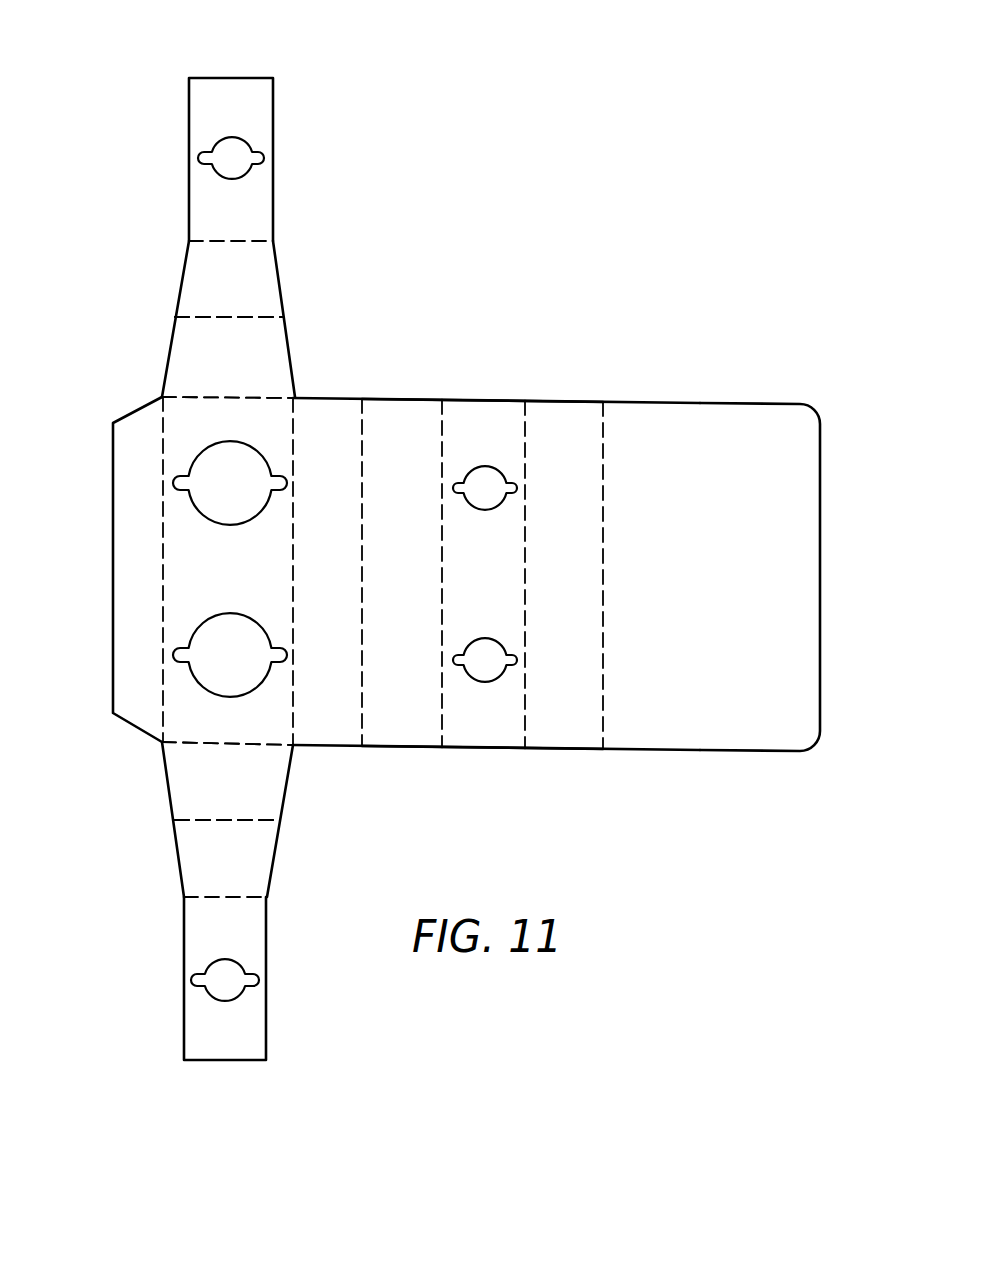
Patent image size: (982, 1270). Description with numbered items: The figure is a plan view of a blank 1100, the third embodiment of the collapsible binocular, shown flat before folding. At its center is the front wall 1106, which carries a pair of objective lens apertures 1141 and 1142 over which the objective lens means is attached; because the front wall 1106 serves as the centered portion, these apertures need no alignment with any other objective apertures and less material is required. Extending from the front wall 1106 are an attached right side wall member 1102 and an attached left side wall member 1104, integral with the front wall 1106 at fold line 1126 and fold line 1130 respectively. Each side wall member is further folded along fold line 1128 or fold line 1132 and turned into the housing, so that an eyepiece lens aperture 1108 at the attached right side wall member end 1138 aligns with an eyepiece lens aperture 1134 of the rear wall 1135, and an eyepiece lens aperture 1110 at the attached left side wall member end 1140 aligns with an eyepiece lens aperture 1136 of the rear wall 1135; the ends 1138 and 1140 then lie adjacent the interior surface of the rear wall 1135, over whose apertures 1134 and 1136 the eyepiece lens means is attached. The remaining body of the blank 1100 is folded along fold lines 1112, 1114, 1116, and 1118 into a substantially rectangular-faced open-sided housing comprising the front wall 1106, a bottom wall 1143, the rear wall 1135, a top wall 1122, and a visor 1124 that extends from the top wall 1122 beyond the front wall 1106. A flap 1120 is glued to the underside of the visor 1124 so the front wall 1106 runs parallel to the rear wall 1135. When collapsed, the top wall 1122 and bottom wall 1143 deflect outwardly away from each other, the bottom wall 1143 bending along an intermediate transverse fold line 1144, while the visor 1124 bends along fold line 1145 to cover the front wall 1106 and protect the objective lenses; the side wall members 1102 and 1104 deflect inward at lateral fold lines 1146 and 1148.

The blank 1100 is at (437, 341).
The attached right side wall member 1102 is at (283, 303).
The attached left side wall member 1104 is at (281, 833).
The front wall 1106 is at (280, 533).
The eyepiece lens aperture 1108 is at (266, 152).
The eyepiece lens aperture 1110 is at (240, 973).
The fold line 1112 is at (162, 668).
The fold line 1114 is at (293, 631).
The fold line 1116 is at (442, 593).
The fold line 1118 is at (527, 530).
The flap 1120 is at (127, 514).
The top wall 1122 is at (555, 743).
The visor 1124 is at (808, 563).
The fold line 1126 is at (217, 393).
The fold line 1128 is at (228, 247).
The fold line 1130 is at (230, 748).
The fold line 1132 is at (227, 893).
The eyepiece lens aperture 1134 is at (487, 476).
The rear wall 1135 is at (507, 602).
The eyepiece lens aperture 1136 is at (483, 680).
The attached right side wall member end 1138 is at (247, 90).
The attached left side wall member end 1140 is at (228, 1053).
The objective lens aperture 1141 is at (225, 447).
The objective lens aperture 1142 is at (220, 616).
The bottom wall 1143 is at (375, 741).
The intermediate transverse fold line 1144 is at (367, 490).
The fold line 1145 is at (603, 545).
The lateral fold line 1146 is at (200, 317).
The lateral fold line 1148 is at (198, 822).